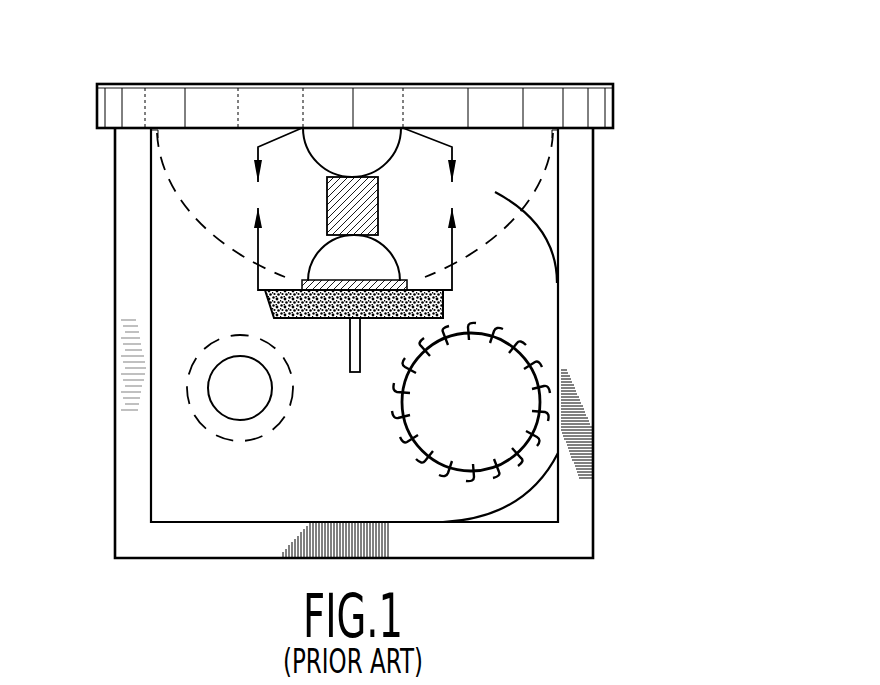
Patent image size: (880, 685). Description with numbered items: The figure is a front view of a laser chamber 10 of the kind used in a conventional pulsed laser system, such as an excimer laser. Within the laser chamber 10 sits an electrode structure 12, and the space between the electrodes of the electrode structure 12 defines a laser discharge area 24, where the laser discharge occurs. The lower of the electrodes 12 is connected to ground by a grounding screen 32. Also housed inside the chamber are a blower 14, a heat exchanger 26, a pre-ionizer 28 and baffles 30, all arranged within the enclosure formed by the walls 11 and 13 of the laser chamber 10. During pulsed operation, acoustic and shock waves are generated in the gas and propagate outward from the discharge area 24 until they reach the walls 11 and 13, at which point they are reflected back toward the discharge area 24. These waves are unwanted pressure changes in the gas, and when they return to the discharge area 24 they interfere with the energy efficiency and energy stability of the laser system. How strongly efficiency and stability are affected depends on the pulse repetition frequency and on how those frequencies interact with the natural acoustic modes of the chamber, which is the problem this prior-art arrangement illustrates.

The laser chamber 10 is at (648, 92).
The wall 11 is at (150, 238).
The electrode structure 12 is at (366, 158).
The wall 13 is at (558, 313).
The blower 14 is at (485, 416).
The laser discharge area 24 is at (360, 203).
The heat exchanger 26 is at (254, 402).
The pre-ionizer 28 is at (258, 243).
The baffles 30 is at (535, 220).
The grounding screen 32 is at (205, 230).